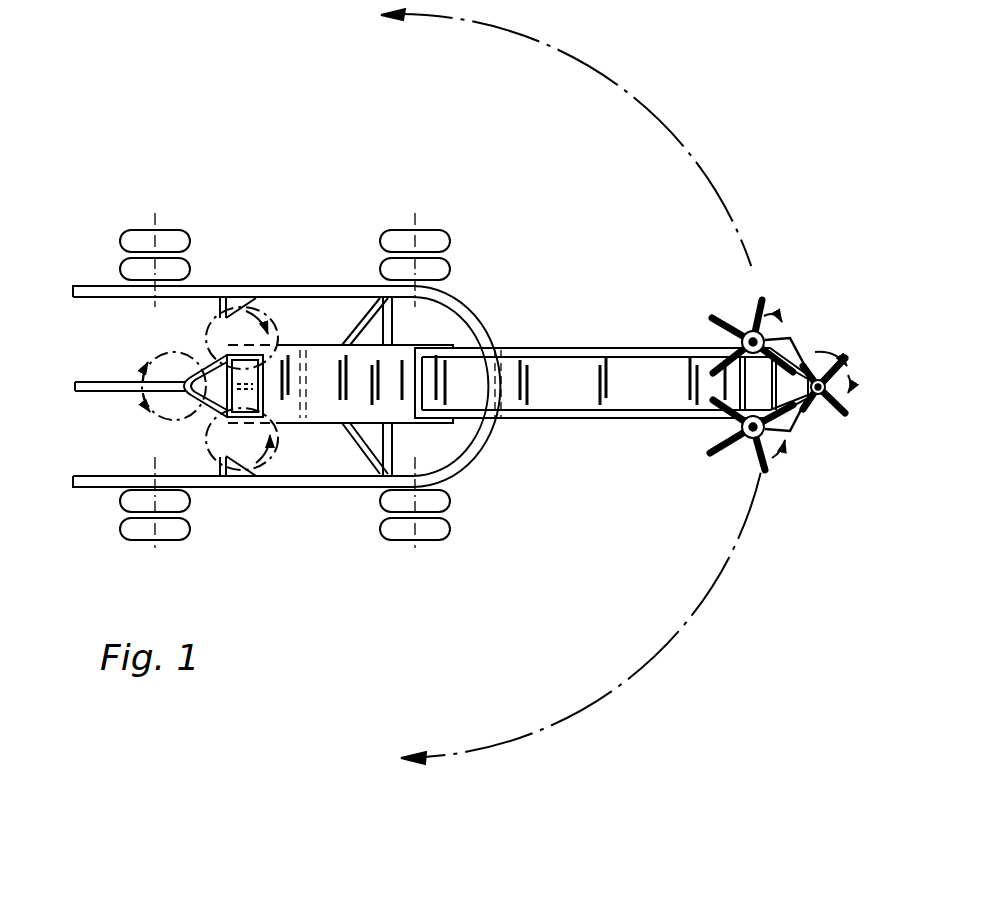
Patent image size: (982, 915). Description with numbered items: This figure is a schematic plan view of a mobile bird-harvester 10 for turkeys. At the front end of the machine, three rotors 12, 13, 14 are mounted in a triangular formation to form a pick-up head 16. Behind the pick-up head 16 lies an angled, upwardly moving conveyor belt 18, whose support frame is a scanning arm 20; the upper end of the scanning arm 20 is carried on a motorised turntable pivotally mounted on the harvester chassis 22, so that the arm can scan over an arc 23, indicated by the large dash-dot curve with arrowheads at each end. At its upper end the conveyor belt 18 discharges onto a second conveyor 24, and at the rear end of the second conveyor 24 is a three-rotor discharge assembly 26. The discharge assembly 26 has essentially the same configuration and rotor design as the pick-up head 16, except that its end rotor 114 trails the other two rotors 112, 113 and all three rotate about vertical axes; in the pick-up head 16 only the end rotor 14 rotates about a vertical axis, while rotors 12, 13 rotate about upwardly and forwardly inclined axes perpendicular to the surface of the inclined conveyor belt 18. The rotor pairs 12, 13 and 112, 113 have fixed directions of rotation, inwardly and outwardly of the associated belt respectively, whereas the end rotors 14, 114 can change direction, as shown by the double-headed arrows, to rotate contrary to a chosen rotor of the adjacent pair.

The mobile bird-harvester 10 is at (303, 245).
The rotor 12 is at (733, 317).
The rotor 13 is at (738, 453).
The end rotor 14 is at (826, 404).
The pick-up head 16 is at (808, 322).
The conveyor belt 18 is at (570, 390).
The scanning arm 20 is at (585, 350).
The harvester chassis 22 is at (325, 481).
The arc 23 is at (722, 200).
The second conveyor 24 is at (316, 405).
The 3-rotor discharge assembly 26 is at (160, 436).
The rotor 112 is at (243, 447).
The rotor 113 is at (250, 316).
The end rotor 114 is at (175, 350).